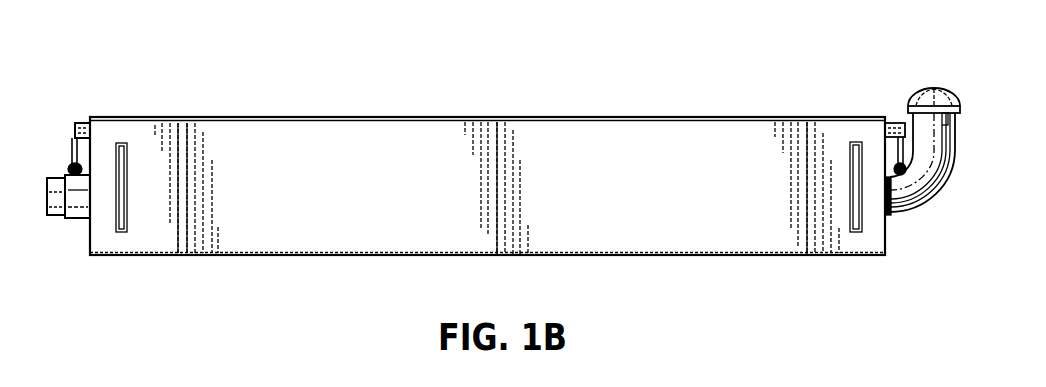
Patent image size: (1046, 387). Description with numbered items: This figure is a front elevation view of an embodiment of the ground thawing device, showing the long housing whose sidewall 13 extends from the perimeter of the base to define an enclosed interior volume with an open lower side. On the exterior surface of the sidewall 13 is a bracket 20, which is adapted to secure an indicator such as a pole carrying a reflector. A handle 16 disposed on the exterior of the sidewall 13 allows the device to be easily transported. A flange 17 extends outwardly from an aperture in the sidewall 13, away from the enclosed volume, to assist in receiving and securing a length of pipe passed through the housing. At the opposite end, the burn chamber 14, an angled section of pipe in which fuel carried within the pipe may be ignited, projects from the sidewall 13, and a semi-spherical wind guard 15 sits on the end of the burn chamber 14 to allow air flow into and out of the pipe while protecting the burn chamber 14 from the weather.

The sidewall 13 is at (732, 215).
The burn chamber 14 is at (927, 180).
The semi-spherical wind guard 15 is at (937, 88).
The handle 16 is at (68, 126).
The flange 17 is at (47, 218).
The bracket 20 is at (125, 173).